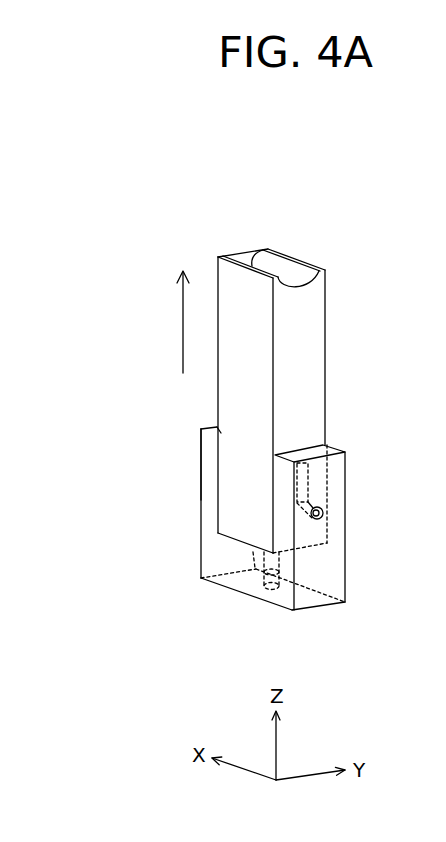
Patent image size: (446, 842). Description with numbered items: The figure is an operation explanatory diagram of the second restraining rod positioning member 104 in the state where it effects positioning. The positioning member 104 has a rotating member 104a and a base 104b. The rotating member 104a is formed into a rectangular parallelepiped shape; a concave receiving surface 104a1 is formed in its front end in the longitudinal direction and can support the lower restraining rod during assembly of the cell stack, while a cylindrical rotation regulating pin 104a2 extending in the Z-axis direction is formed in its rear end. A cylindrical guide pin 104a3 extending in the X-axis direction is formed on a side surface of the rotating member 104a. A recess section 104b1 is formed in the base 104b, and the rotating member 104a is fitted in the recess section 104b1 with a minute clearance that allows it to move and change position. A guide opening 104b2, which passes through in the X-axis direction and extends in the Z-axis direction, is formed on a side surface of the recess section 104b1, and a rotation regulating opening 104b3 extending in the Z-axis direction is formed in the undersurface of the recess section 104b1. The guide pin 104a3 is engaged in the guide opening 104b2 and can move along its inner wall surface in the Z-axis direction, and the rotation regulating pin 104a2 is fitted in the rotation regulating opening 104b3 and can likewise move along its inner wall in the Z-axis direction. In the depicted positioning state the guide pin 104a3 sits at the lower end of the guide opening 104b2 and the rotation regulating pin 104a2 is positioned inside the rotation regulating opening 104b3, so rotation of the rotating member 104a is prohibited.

The second restraining rod positioning member 104 is at (273, 218).
The rotating member 104a is at (298, 345).
The receiving surface 104a1 is at (297, 273).
The rotation regulating pin 104a2 is at (250, 570).
The guide pin 104a3 is at (327, 516).
The base 104b is at (328, 577).
The recess section 104b1 is at (218, 478).
The guide opening 104b2 is at (311, 479).
The rotation regulating opening 104b3 is at (268, 593).